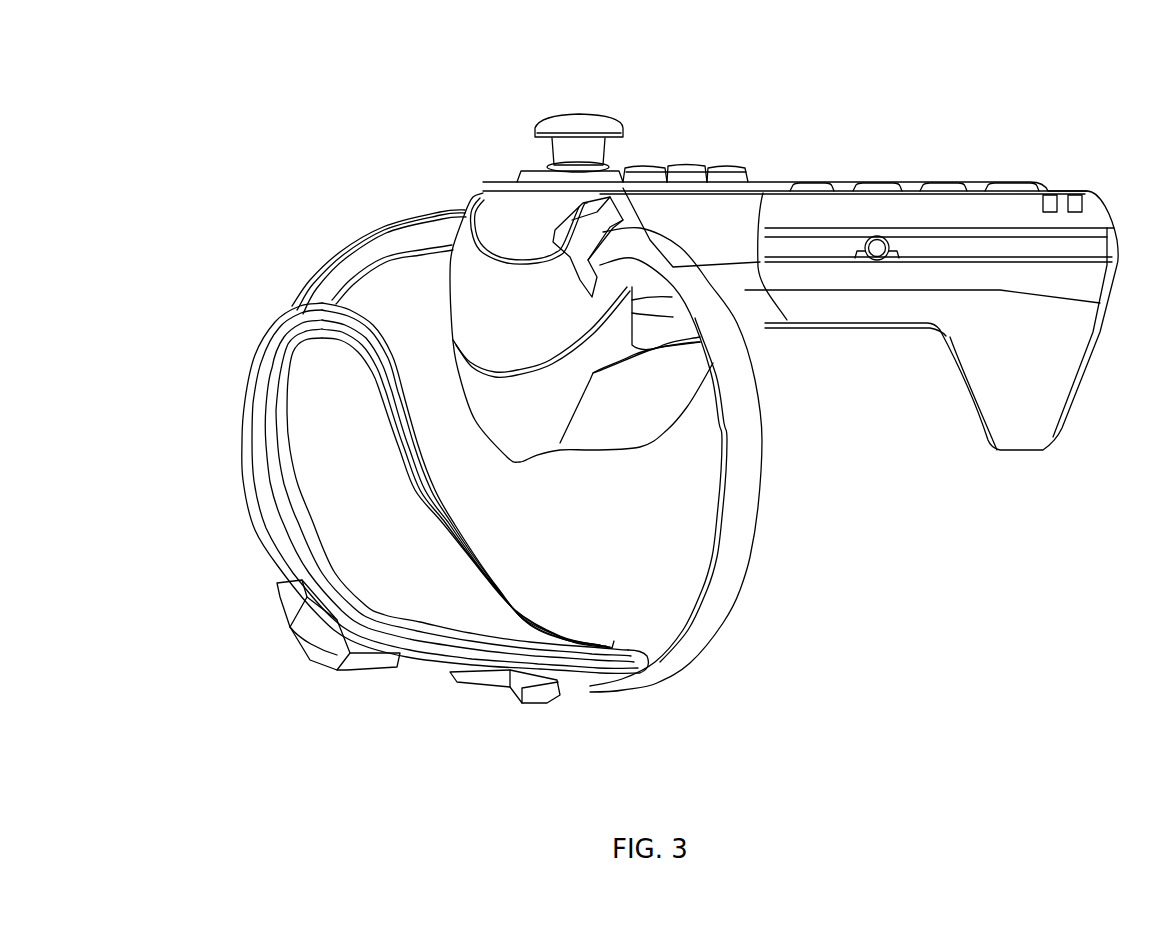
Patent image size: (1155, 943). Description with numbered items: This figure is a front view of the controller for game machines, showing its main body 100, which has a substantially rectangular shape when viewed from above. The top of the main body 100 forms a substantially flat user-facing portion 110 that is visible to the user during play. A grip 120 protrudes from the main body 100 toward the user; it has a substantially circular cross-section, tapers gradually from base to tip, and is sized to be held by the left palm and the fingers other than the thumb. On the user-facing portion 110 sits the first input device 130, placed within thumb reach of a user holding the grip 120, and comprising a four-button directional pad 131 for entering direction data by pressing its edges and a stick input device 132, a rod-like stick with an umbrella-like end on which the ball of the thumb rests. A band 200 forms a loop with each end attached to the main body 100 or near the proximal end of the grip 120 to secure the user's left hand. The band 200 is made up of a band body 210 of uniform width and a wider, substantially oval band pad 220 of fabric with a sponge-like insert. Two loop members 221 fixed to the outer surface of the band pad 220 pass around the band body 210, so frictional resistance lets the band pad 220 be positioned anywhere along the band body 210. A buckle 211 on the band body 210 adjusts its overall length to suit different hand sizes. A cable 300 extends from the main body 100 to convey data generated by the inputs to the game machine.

The main body 100 is at (1063, 188).
The user-facing portion 110 is at (911, 182).
The grip 120 is at (522, 440).
The first input device 130 is at (700, 50).
The four-button directional pad 131 is at (682, 166).
The stick input device 132 is at (598, 124).
The band 200 is at (619, 683).
The band body 210 is at (735, 597).
The buckle 211 is at (335, 665).
The band pad 220 is at (258, 452).
The loop members 221 is at (498, 690).
The cable 300 is at (877, 260).